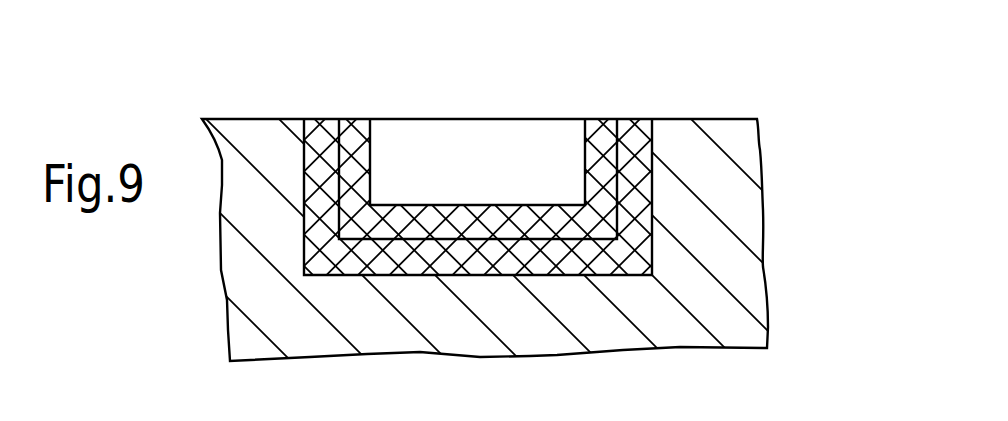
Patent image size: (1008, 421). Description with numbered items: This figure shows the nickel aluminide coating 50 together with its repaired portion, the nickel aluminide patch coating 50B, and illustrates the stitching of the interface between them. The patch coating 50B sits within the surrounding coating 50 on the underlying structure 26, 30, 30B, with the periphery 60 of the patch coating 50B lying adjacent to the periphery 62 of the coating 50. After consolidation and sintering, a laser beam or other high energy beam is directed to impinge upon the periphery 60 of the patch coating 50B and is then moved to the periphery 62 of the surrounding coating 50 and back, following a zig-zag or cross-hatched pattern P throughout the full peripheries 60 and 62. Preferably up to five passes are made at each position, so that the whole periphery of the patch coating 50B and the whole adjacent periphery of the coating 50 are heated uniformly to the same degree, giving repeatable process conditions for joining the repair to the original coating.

The substrate 26 is at (501, 242).
The interconnect structure 30 is at (501, 242).
The interconnect structure portion 30B is at (501, 242).
The nickel aluminide coating 50 is at (247, 132).
The nickel aluminide patch coating 50B is at (606, 110).
The periphery of the nickel aluminide patch coating 60 is at (358, 137).
The periphery of the nickel aluminide coating 62 is at (360, 257).
The cross-hatched pattern P is at (503, 258).